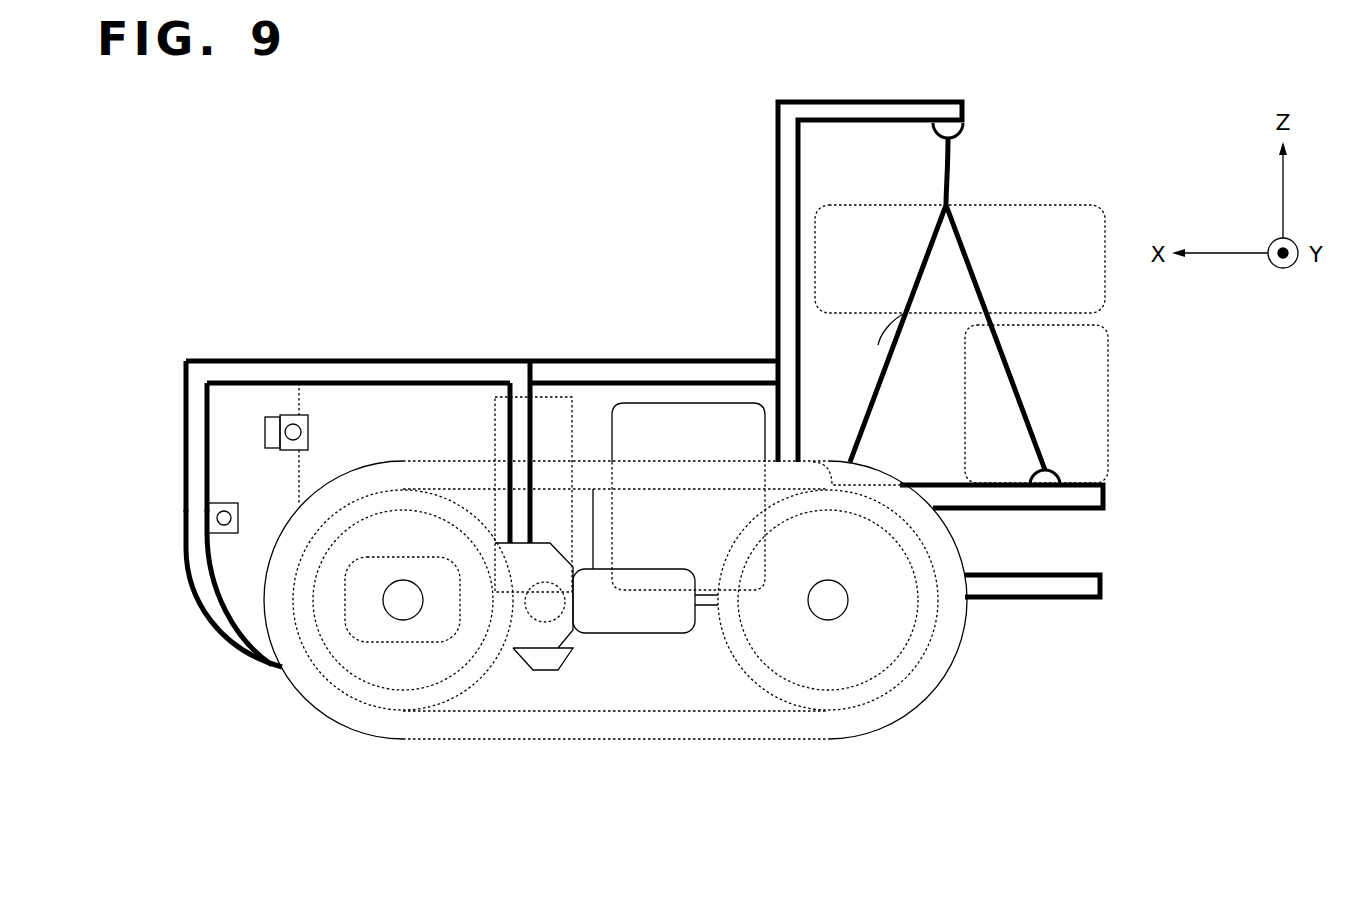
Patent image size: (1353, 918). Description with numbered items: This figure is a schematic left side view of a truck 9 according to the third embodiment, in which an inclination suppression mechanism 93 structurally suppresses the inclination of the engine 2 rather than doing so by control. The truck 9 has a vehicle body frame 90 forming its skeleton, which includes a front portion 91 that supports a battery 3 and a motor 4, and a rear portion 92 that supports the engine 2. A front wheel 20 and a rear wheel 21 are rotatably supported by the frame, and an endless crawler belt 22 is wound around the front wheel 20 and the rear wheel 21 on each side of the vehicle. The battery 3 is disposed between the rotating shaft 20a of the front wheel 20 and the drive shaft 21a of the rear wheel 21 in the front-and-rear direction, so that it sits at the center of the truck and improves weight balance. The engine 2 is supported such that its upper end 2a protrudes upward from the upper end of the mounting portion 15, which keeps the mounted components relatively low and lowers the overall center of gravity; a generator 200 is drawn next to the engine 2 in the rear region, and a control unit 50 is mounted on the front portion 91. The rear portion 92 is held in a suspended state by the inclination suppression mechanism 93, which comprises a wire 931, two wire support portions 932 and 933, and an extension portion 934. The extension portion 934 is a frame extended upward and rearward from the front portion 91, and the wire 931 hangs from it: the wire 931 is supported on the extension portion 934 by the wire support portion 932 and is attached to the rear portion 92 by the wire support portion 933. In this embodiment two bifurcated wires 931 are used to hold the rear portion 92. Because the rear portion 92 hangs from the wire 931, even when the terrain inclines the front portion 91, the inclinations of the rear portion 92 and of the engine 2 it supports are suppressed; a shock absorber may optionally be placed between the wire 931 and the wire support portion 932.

The truck 9 is at (270, 160).
The vehicle body frame 90 is at (163, 361).
The front portion 91 is at (183, 517).
The mounting portion 15 is at (308, 360).
The control unit 50 is at (538, 394).
The battery 3 is at (652, 402).
The motor 4 is at (347, 615).
The front wheel 20 is at (465, 693).
The rotating shaft 20a is at (403, 600).
The rear wheel 21 is at (773, 700).
The drive shaft 21a is at (828, 600).
The crawler belt 22 is at (672, 739).
The engine 2 is at (1137, 195).
The upper end 2a is at (1097, 207).
The generator 200 is at (1110, 378).
The rear portion 92 is at (1107, 507).
The inclination suppression mechanism 93 is at (984, 148).
The wire 931 is at (952, 192).
The wire support portion 932 is at (947, 120).
The wire support portion 933 is at (1062, 470).
The extension portion 934 is at (777, 127).